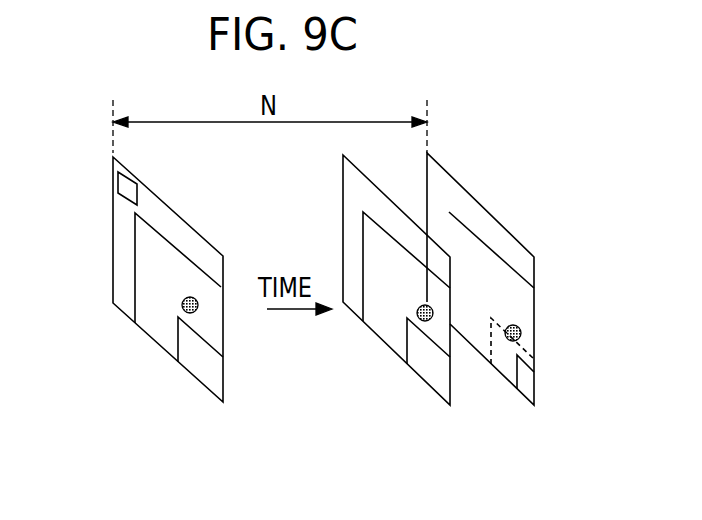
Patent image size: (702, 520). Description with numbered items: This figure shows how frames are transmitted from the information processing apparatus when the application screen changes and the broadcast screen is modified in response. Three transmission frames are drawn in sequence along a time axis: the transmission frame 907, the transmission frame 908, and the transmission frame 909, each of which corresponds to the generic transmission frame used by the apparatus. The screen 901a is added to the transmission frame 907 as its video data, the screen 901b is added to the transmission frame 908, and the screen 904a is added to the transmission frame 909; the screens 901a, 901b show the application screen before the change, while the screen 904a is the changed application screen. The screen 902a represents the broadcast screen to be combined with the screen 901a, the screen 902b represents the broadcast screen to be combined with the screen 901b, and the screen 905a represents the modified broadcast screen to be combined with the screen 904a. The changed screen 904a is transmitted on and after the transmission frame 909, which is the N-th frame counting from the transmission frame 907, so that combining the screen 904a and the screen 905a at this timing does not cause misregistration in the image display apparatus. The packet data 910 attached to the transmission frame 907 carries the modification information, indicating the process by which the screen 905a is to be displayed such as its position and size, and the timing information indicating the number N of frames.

The transmission frame 907 is at (112, 213).
The packet data 910 is at (128, 176).
The screen 901a is at (152, 343).
The screen 902a is at (192, 382).
The transmission frame 908 is at (342, 220).
The screen 901b is at (377, 337).
The screen 902b is at (422, 379).
The transmission frame 909 is at (475, 198).
The screen 904a is at (483, 357).
The screen 905a is at (520, 395).